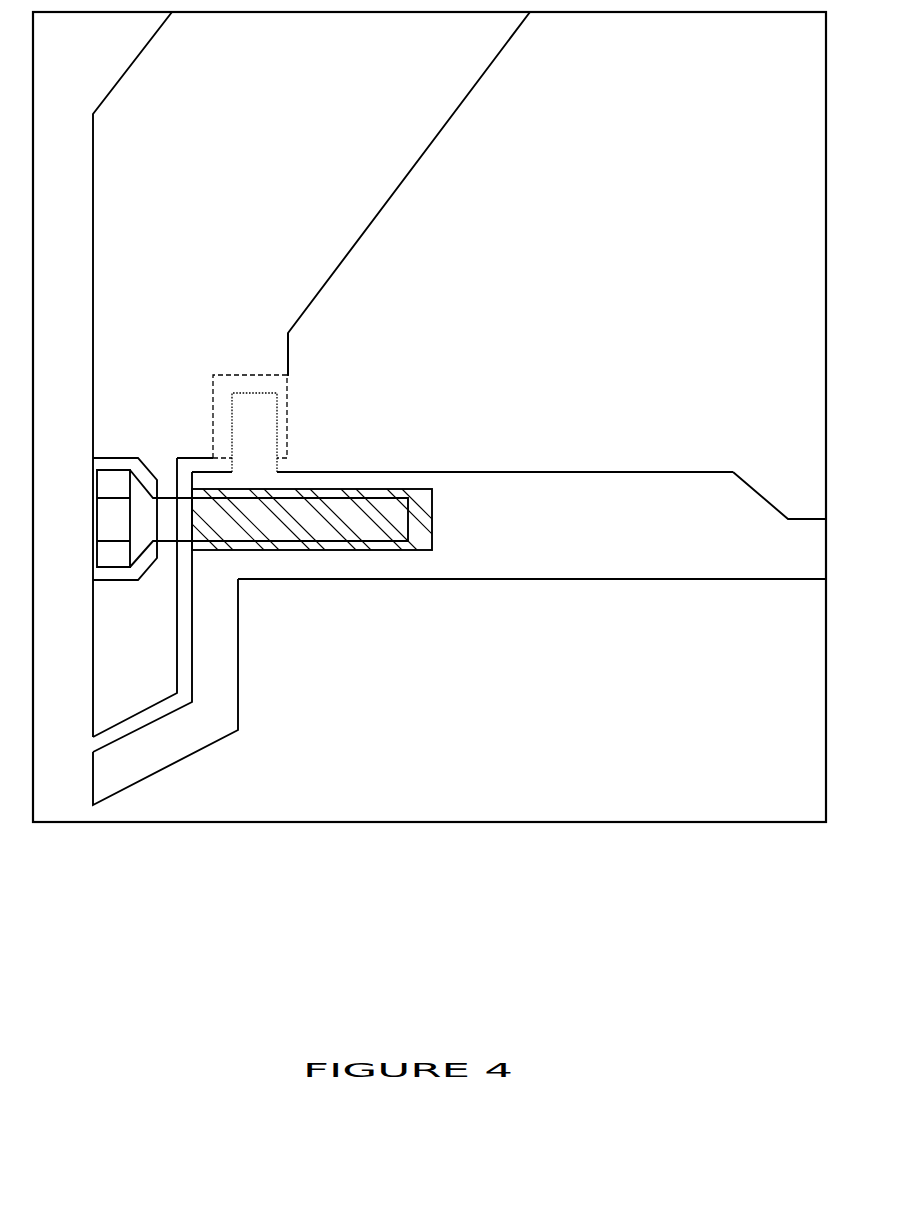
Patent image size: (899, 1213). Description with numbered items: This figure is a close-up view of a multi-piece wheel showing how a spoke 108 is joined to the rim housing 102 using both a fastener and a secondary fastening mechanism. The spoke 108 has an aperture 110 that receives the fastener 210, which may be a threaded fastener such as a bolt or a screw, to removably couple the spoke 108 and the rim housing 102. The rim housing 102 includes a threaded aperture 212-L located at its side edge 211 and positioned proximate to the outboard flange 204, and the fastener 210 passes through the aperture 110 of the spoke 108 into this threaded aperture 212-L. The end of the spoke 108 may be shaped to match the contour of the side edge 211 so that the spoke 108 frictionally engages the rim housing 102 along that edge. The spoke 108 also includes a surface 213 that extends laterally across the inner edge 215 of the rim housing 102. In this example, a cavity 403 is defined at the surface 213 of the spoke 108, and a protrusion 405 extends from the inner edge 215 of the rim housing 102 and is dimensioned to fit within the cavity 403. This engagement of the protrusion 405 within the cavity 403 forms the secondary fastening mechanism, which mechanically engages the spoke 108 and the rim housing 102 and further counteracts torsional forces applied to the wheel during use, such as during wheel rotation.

The spoke 108 is at (157, 112).
The cavity 403 is at (242, 377).
The protrusion 405 is at (250, 403).
The surface 213 is at (288, 368).
The inner edge 215 is at (310, 472).
The rim housing 102 is at (473, 557).
The threaded aperture 212-L is at (343, 501).
The aperture 110 is at (115, 465).
The fastener 210 is at (118, 553).
The side edge 211 is at (192, 642).
The outboard flange 204 is at (195, 728).